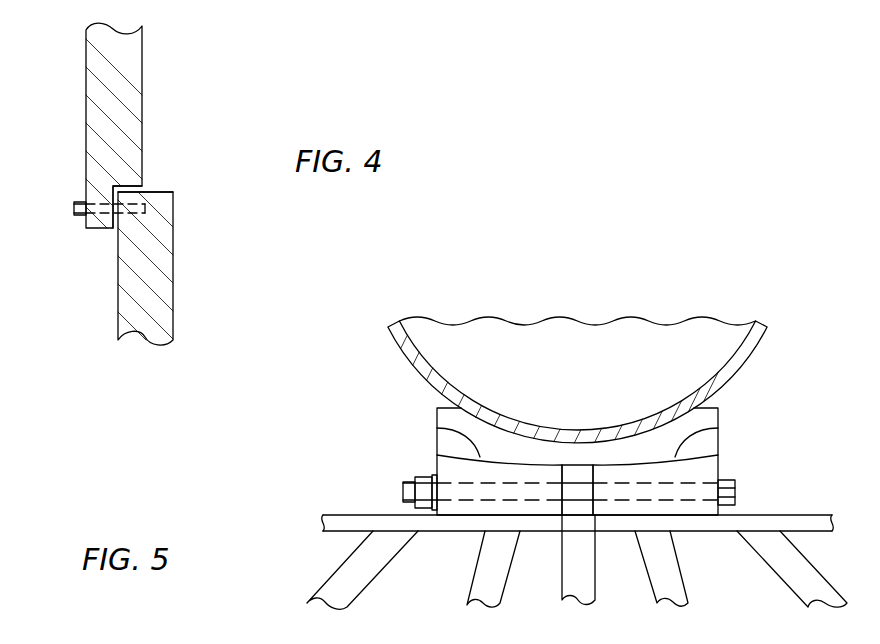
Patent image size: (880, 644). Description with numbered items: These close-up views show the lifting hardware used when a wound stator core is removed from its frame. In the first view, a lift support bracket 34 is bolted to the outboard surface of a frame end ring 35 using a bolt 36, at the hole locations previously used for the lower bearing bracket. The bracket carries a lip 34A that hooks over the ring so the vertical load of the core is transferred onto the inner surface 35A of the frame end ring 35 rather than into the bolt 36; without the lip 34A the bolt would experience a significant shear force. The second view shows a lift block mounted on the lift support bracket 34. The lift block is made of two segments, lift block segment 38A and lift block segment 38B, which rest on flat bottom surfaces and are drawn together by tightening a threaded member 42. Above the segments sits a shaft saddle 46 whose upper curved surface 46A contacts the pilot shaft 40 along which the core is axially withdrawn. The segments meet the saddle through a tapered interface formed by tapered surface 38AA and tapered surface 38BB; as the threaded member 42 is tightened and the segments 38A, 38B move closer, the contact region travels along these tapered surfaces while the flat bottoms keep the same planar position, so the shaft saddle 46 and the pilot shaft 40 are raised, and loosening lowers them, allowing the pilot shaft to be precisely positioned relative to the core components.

In FIG. 4, the lift support bracket 34 is at (142, 90).
In FIG. 5, the lift support bracket 34 is at (693, 532).
In FIG. 4, the lip 34A is at (133, 185).
In FIG. 4, the frame end ring 35 is at (173, 265).
In FIG. 4, the inner surface 35A is at (147, 192).
In FIG. 4, the bolt 36 is at (82, 203).
In FIG. 5, the pilot shaft 40 is at (747, 362).
In FIG. 5, the threaded member 42 is at (735, 490).
In FIG. 5, the shaft saddle 46 is at (718, 410).
In FIG. 5, the upper curved surface 46A is at (517, 462).
In FIG. 5, the lift block segment 38A is at (437, 465).
In FIG. 5, the tapered surface 38AA is at (437, 428).
In FIG. 5, the lift block segment 38B is at (718, 465).
In FIG. 5, the tapered surface 38BB is at (718, 428).